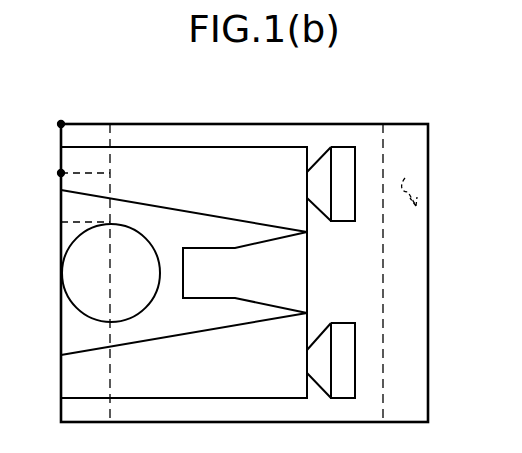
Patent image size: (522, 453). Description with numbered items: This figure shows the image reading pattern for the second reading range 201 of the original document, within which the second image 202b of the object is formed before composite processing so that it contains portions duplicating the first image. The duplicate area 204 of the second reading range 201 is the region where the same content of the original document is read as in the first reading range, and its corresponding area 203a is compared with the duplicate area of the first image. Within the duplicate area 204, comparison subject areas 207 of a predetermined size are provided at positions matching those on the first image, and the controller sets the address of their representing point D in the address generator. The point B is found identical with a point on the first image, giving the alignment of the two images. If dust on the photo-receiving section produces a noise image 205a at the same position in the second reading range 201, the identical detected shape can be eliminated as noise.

The second reading range 201 is at (288, 132).
The second image 202b is at (192, 146).
The corresponding area 203a is at (417, 128).
The duplicate area 204 is at (92, 140).
The noise image 205a is at (420, 184).
The comparison subject areas 207 is at (68, 209).
The point B is at (61, 124).
The representing point D is at (61, 173).